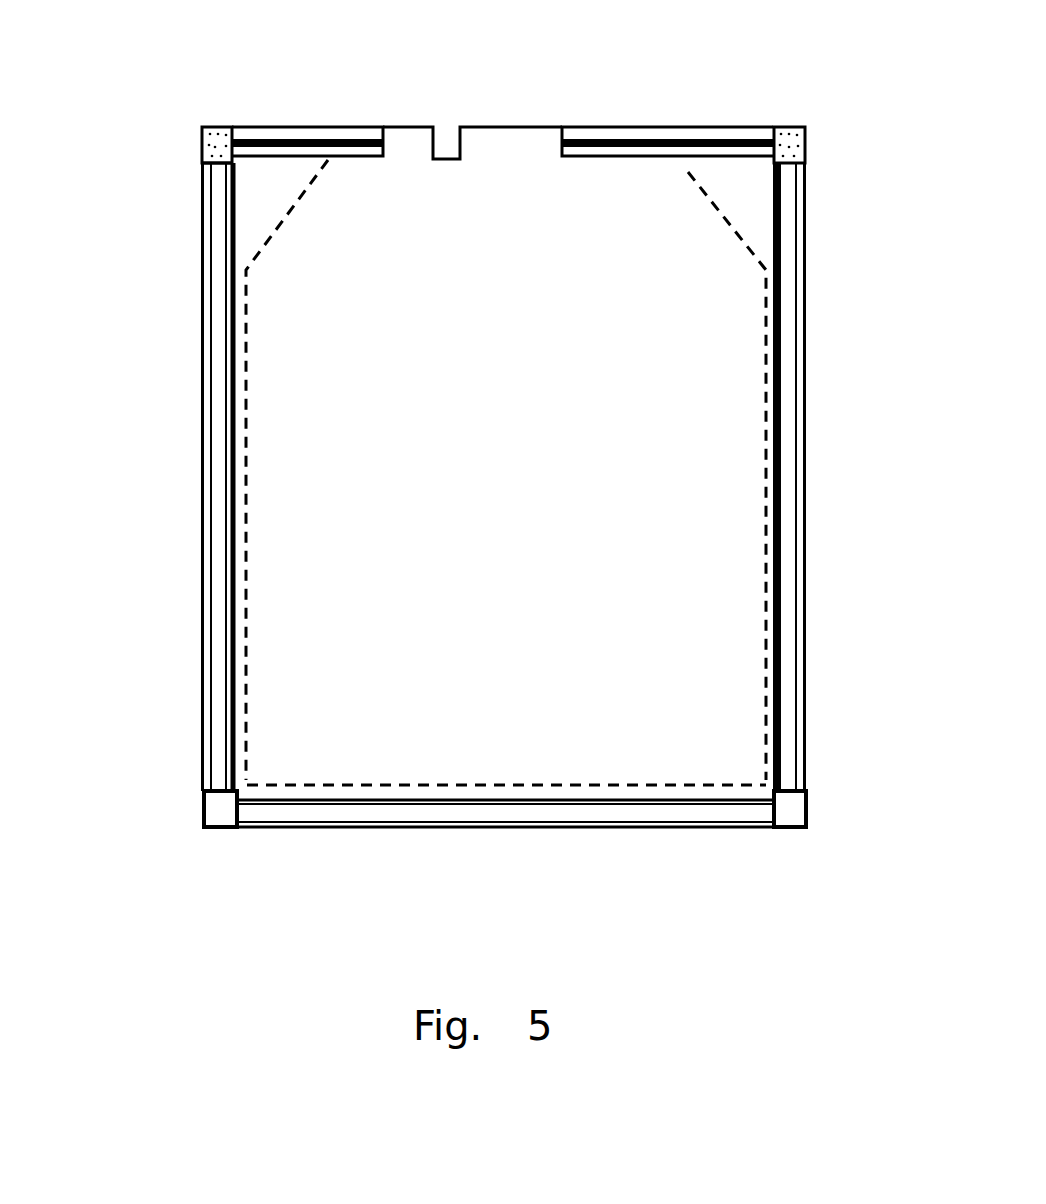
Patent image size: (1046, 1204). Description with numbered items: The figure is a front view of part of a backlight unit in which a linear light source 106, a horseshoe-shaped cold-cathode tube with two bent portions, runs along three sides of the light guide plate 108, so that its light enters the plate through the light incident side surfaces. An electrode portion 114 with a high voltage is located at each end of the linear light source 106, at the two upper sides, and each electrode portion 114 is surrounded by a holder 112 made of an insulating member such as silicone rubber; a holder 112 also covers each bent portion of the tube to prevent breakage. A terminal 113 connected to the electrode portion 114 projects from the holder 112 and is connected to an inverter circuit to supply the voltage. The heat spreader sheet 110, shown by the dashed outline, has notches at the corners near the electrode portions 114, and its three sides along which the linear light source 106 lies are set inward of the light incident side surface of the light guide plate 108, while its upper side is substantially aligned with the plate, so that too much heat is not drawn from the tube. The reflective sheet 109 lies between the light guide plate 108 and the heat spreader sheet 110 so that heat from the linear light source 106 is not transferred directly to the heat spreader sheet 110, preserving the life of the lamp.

The linear light source 106 is at (220, 263).
The light guide plate 108 is at (762, 220).
The reflective sheet 109 is at (202, 368).
The heat spreader sheet 110 is at (652, 185).
The holder 112 is at (202, 142).
The terminal 113 is at (293, 134).
The electrode portion 114 is at (202, 155).